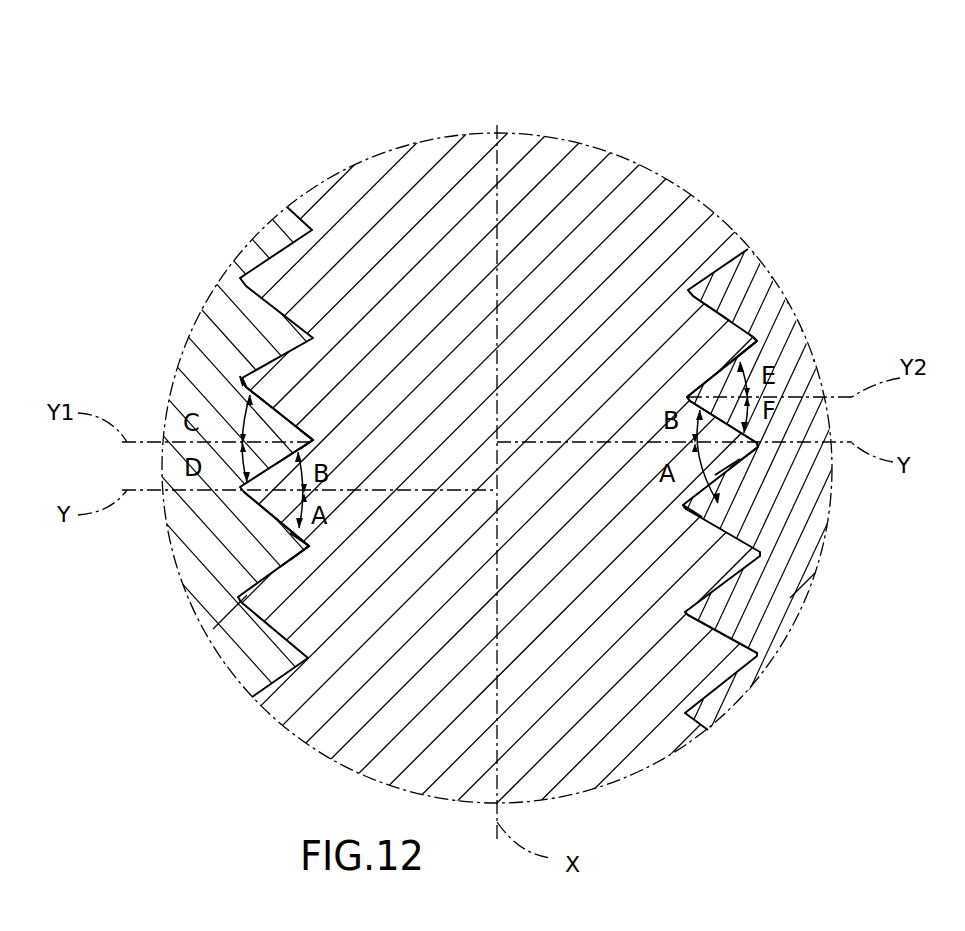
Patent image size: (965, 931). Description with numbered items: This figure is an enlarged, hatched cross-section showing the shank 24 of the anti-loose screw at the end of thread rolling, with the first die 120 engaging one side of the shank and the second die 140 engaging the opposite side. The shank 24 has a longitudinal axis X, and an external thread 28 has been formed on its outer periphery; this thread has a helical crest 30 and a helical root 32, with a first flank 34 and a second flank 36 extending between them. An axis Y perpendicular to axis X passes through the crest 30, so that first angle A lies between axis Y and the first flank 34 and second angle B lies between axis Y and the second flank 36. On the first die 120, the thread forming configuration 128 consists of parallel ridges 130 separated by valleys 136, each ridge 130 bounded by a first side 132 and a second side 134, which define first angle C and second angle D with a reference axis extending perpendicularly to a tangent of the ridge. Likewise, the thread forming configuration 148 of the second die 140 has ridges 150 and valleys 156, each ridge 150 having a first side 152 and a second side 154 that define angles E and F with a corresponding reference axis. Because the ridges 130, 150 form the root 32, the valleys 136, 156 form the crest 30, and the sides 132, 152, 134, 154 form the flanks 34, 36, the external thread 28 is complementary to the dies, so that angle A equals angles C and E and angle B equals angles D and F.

The shank 24 is at (575, 170).
The external thread 28 is at (722, 496).
The crest 30 is at (240, 387).
The root 32 is at (300, 445).
The first flank 34 is at (327, 540).
The second flank 36 is at (292, 440).
The first die 120 is at (220, 607).
The thread forming configuration 128 is at (301, 200).
The ridges 130 is at (318, 443).
The first side 132 is at (248, 378).
The second side 134 is at (300, 537).
The valleys 136 is at (243, 385).
The second die 140 is at (793, 586).
The thread forming configuration 148 is at (718, 250).
The ridges 150 is at (687, 395).
The first side 152 is at (733, 345).
The second side 154 is at (712, 327).
The valleys 156 is at (748, 335).